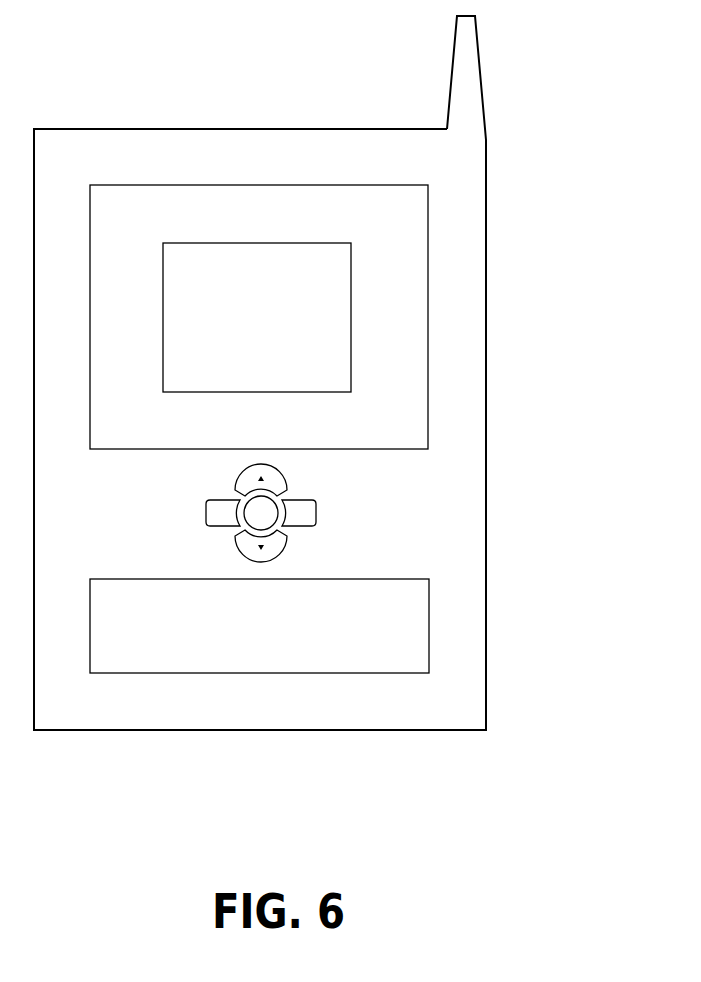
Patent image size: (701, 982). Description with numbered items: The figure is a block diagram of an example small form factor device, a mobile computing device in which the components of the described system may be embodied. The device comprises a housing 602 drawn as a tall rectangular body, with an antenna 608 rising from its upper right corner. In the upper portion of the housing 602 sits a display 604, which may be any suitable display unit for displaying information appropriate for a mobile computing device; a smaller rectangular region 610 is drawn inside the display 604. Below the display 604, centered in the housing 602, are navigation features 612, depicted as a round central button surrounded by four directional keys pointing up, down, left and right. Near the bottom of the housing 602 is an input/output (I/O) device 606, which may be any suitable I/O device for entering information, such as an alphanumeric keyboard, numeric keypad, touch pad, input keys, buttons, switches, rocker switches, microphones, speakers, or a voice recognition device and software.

The housing 602 is at (486, 430).
The display 604 is at (429, 204).
The input/output (I/O) device 606 is at (429, 617).
The antenna 608 is at (452, 64).
The display window 610 is at (352, 283).
The navigation features 612 is at (333, 504).